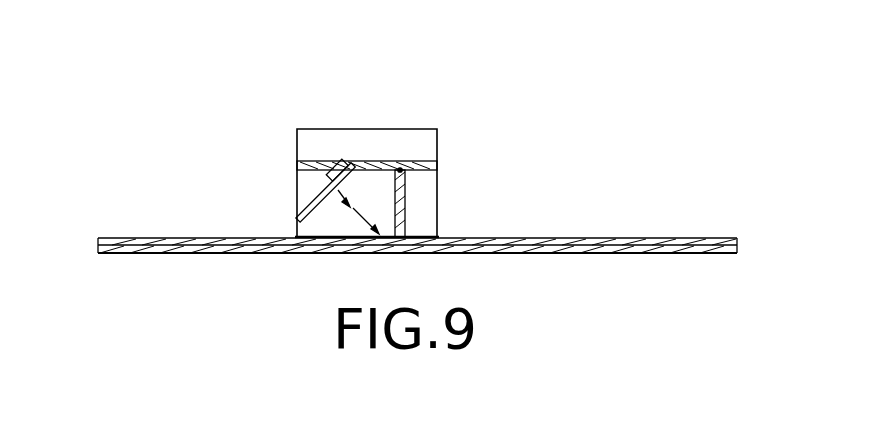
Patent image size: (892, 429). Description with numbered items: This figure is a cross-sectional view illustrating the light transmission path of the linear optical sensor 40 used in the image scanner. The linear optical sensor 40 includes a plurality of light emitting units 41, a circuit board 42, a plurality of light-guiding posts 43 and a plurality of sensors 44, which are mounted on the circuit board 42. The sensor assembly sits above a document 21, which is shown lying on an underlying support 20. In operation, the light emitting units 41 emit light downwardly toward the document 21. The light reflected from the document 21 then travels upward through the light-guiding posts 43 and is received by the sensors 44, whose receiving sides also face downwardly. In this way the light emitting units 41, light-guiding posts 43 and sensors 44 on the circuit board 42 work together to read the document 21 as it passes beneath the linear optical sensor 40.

The substrate 20 is at (653, 255).
The document 21 is at (600, 238).
The linear optical sensor 40 is at (387, 127).
The light emitting unit 41 is at (351, 166).
The circuit board 42 is at (371, 163).
The light-guiding post 43 is at (406, 186).
The sensor 44 is at (401, 169).